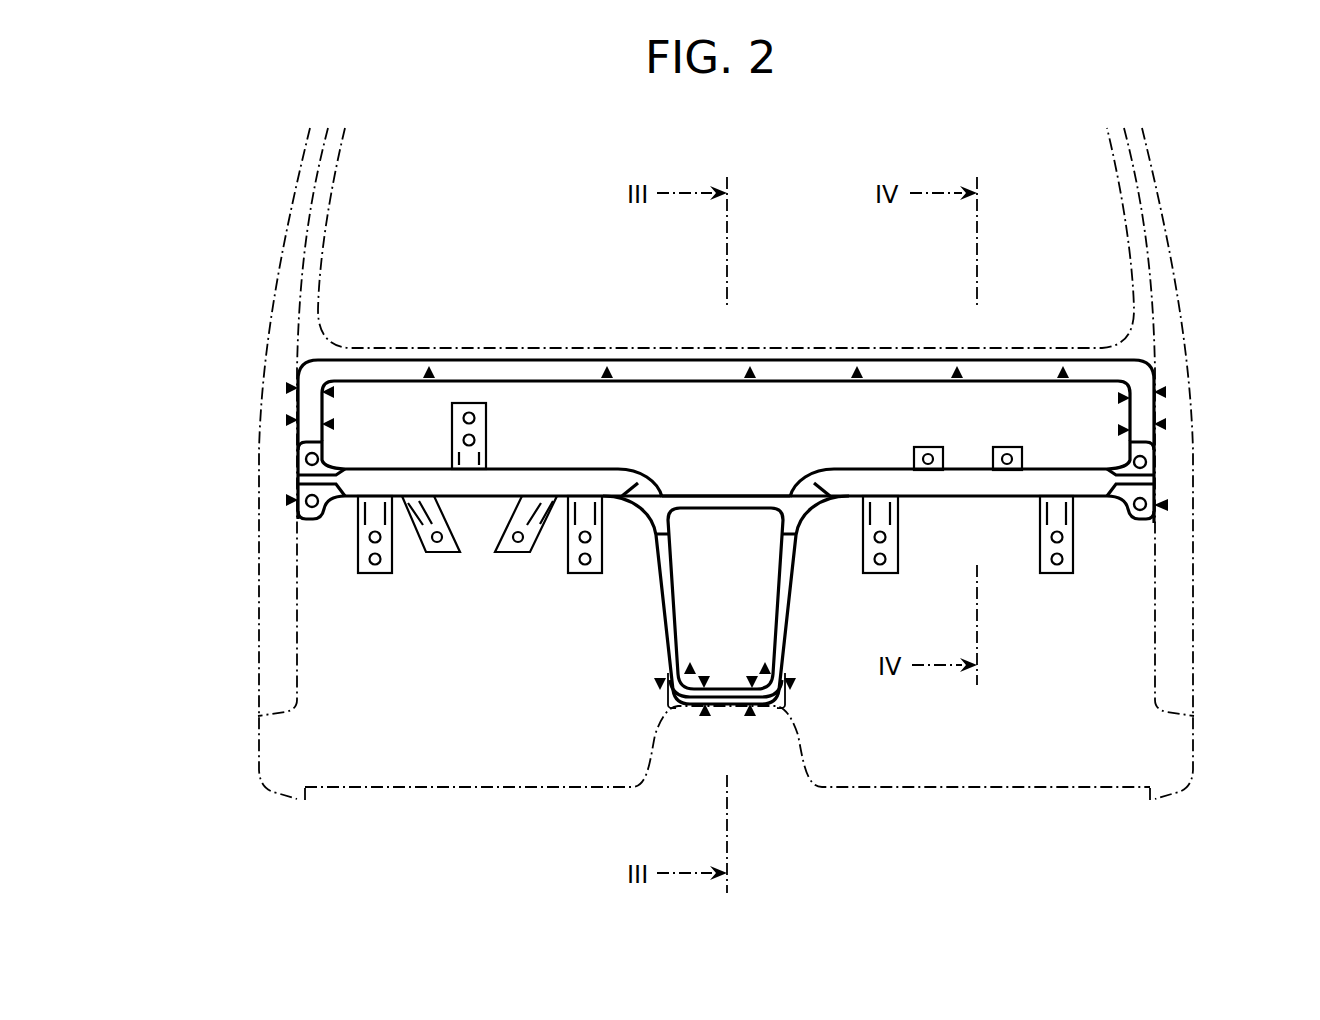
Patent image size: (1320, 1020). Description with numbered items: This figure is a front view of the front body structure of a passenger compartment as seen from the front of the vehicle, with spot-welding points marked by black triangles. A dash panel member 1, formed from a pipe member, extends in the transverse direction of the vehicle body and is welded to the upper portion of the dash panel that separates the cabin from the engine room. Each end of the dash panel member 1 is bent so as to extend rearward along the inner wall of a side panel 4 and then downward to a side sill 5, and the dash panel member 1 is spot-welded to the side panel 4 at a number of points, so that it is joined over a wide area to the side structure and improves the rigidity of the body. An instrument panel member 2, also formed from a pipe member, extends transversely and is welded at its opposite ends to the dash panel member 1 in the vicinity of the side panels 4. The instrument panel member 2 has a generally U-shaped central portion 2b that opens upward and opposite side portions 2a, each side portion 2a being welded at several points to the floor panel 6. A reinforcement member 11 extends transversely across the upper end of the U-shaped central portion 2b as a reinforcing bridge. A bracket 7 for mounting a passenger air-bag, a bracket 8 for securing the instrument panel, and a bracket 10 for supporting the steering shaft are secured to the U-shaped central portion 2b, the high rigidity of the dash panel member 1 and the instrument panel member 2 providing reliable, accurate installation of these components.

The dash panel member 1 is at (786, 372).
The instrument panel member 2 is at (726, 560).
The side portion 2a is at (787, 623).
The U-shaped central portion 2b is at (852, 478).
The side panel 4 is at (257, 640).
The side sill 5 is at (285, 730).
The floor panel 6 is at (995, 790).
The bracket 7 is at (993, 452).
The bracket 8 is at (360, 573).
The bracket 10 is at (487, 445).
The reinforcement member 11 is at (697, 495).